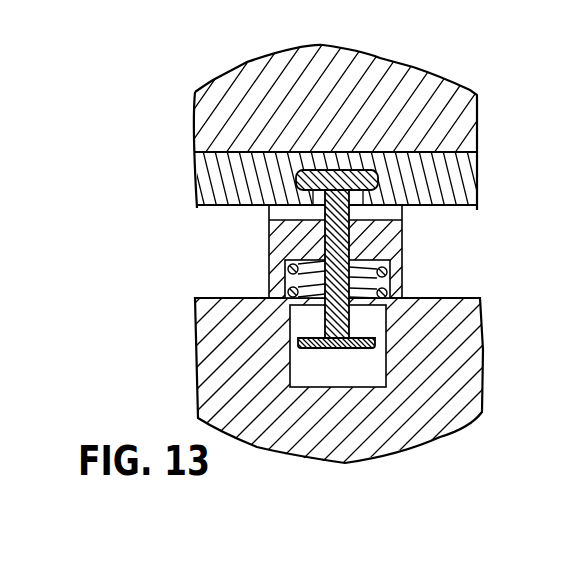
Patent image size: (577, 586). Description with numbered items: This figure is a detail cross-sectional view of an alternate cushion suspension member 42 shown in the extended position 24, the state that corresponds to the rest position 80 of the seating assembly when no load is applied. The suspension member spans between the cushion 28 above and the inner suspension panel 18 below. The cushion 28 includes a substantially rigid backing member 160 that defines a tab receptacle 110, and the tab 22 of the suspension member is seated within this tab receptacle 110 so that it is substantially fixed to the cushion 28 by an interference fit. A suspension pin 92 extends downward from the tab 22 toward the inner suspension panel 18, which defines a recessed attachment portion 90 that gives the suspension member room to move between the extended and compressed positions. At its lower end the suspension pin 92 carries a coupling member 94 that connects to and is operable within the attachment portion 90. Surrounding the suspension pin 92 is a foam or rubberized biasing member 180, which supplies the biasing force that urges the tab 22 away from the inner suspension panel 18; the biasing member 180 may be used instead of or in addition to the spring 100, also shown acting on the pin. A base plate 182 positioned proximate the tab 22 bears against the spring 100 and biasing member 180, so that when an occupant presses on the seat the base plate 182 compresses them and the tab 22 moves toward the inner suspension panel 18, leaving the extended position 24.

The rest position 80 is at (206, 45).
The cushion 28 is at (228, 112).
The tab receptacle 110 is at (294, 176).
The tab 22 is at (250, 183).
The backing member 160 is at (457, 177).
The cushion suspension member 42 is at (250, 231).
The extended position 24 is at (196, 266).
The base plate 182 is at (395, 212).
The foam or rubberized biasing member 180 is at (392, 240).
The spring 100 is at (387, 267).
The suspension pin 92 is at (387, 281).
The inner suspension panel 18 is at (225, 345).
The coupling member 94 is at (368, 349).
The attachment portion 90 is at (368, 375).